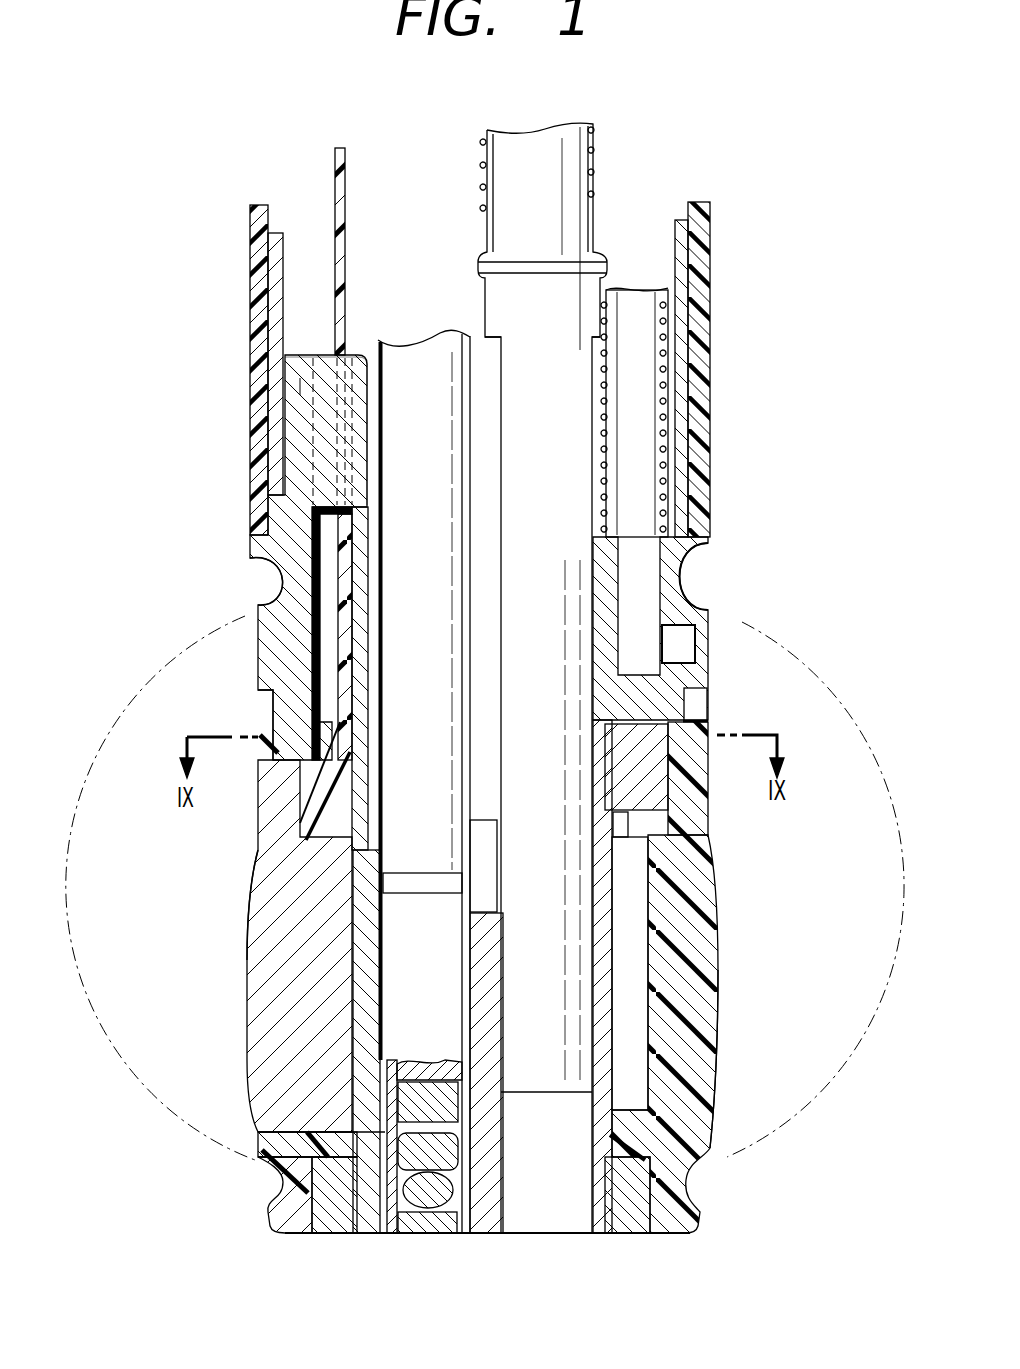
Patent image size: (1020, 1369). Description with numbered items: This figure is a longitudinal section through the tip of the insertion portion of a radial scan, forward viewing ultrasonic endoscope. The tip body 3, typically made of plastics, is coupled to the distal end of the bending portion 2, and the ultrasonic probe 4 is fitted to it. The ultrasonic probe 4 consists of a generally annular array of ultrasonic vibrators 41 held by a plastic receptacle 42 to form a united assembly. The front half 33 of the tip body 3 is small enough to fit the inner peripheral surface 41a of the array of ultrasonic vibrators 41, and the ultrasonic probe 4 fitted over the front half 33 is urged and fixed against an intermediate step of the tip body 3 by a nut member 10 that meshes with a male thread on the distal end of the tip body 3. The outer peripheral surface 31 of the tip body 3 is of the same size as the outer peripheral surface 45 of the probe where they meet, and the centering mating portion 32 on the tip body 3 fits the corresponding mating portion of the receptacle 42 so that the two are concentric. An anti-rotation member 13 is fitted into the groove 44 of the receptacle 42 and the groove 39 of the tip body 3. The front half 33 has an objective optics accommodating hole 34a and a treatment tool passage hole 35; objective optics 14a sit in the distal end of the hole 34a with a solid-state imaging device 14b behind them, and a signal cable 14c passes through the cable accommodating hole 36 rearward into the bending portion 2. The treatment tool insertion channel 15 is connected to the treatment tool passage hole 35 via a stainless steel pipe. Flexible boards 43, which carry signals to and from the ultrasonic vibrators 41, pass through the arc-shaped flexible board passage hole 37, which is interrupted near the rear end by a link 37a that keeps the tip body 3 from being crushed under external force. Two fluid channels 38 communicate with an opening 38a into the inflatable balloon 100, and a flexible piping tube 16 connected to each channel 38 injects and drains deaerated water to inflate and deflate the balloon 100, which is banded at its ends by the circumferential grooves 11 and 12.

The bending portion 2 is at (745, 180).
The tip body 3 is at (722, 598).
The ultrasonic probe 4 is at (742, 947).
The nut member 10 is at (635, 1218).
The circumferential groove 11 is at (270, 1186).
The circumferential groove 12 is at (270, 582).
The anti-rotation member 13 is at (657, 762).
The objective optics 14a is at (396, 1147).
The solid-state imaging device 14b is at (396, 1098).
The signal cable 14c is at (422, 352).
The treatment tool insertion channel 15 is at (598, 187).
The flexible piping tube 16 is at (670, 326).
The outer peripheral surface 31 is at (262, 651).
The centering mating portion 32 is at (266, 697).
The front half 33 is at (372, 1010).
The objective optics accommodating hole 34a is at (392, 1062).
The treatment tool passage hole 35 is at (593, 1140).
The cable accommodating hole 36 is at (335, 520).
The flexible board passage hole 37 is at (308, 622).
The link 37a is at (300, 386).
The fluid channel 38 is at (702, 546).
The opening 38a is at (700, 648).
The groove 39 is at (628, 818).
The ultrasonic vibrator 41 is at (260, 953).
The inner peripheral surface 41a is at (352, 928).
The receptacle 42 is at (716, 975).
The flexible board 43 is at (348, 186).
The groove 44 is at (670, 785).
The outer peripheral surface 45 is at (258, 750).
The inflatable balloon 100 is at (805, 662).